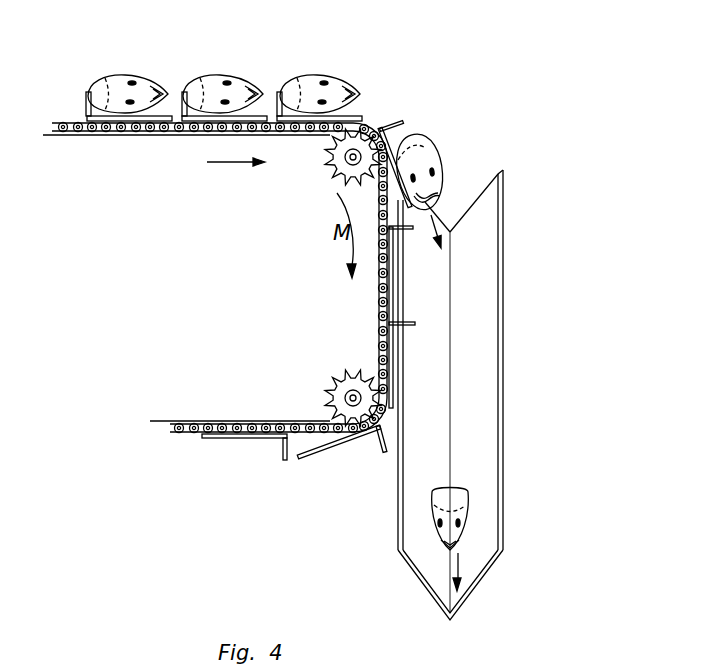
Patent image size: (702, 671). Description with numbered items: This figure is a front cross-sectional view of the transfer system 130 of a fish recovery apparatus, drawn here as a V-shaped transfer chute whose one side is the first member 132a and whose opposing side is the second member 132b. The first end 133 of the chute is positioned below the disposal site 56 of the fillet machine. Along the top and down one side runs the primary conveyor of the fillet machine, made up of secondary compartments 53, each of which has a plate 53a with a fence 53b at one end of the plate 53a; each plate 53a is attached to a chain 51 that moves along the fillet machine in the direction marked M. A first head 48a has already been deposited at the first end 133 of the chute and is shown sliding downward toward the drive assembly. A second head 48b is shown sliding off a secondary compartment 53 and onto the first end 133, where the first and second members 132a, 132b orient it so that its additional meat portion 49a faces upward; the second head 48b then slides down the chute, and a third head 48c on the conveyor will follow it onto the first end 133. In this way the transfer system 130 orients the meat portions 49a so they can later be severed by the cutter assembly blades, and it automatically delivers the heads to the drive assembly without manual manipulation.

The chain 51 is at (168, 131).
The secondary compartment 53 is at (377, 95).
The plate 53a is at (366, 110).
The fence 53b is at (87, 108).
The first head 48a is at (468, 507).
The second head 48b is at (442, 173).
The third head 48c is at (318, 77).
The additional meat portion 49a is at (415, 133).
The disposal site 56 is at (462, 133).
The transfer system 130 is at (530, 395).
The first member 132a is at (430, 398).
The second member 132b is at (473, 268).
The first end 133 is at (463, 200).